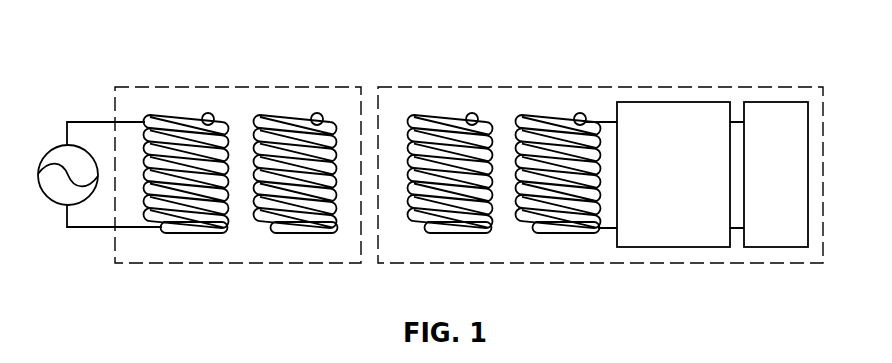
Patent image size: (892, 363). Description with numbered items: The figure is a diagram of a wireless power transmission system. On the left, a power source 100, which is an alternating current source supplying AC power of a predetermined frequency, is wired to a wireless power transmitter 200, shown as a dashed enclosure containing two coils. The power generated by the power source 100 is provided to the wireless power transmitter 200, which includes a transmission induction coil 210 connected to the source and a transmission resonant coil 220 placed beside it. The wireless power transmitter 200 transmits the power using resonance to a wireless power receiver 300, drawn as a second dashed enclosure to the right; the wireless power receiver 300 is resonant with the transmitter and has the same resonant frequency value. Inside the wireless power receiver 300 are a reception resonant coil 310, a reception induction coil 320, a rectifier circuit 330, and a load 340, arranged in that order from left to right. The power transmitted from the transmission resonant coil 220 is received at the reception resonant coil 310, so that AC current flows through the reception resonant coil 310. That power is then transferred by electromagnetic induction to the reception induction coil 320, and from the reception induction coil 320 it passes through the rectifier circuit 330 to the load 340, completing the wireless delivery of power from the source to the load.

The power source 100 is at (46, 150).
The wireless power transmitter 200 is at (137, 85).
The transmission induction coil 210 is at (197, 132).
The transmission resonant coil 220 is at (295, 128).
The wireless power receiver 300 is at (497, 85).
The reception resonant coil 310 is at (445, 127).
The reception induction coil 320 is at (565, 128).
The rectifier circuit 330 is at (648, 100).
The load 340 is at (775, 100).